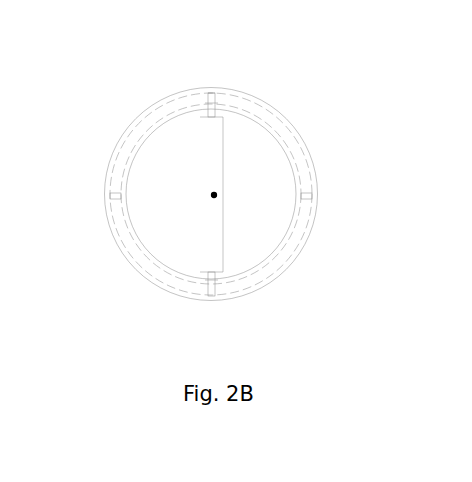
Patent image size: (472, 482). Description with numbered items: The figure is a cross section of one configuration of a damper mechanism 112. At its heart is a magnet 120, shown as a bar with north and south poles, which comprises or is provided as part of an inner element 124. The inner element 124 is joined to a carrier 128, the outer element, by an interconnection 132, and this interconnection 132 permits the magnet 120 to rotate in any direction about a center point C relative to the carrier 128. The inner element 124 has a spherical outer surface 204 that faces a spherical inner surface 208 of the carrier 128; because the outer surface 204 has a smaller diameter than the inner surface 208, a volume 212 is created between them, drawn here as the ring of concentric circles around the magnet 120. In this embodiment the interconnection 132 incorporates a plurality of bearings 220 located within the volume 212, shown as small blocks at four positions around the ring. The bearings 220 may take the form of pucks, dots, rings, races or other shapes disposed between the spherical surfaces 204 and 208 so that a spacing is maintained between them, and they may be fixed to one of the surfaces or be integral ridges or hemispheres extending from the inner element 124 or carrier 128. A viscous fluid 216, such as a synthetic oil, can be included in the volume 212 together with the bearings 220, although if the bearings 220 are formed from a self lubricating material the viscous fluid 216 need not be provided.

The damper mechanism 112 is at (197, 198).
The magnet 120 is at (205, 233).
The inner element 124 is at (298, 162).
The carrier 128 is at (290, 127).
The interconnection 132 is at (215, 98).
The spherical outer surface 204 is at (277, 263).
The spherical inner surface 208 is at (294, 252).
The volume 212 is at (170, 287).
The viscous fluid 216 is at (120, 158).
The bearings 220 is at (212, 95).
The center point C is at (212, 196).